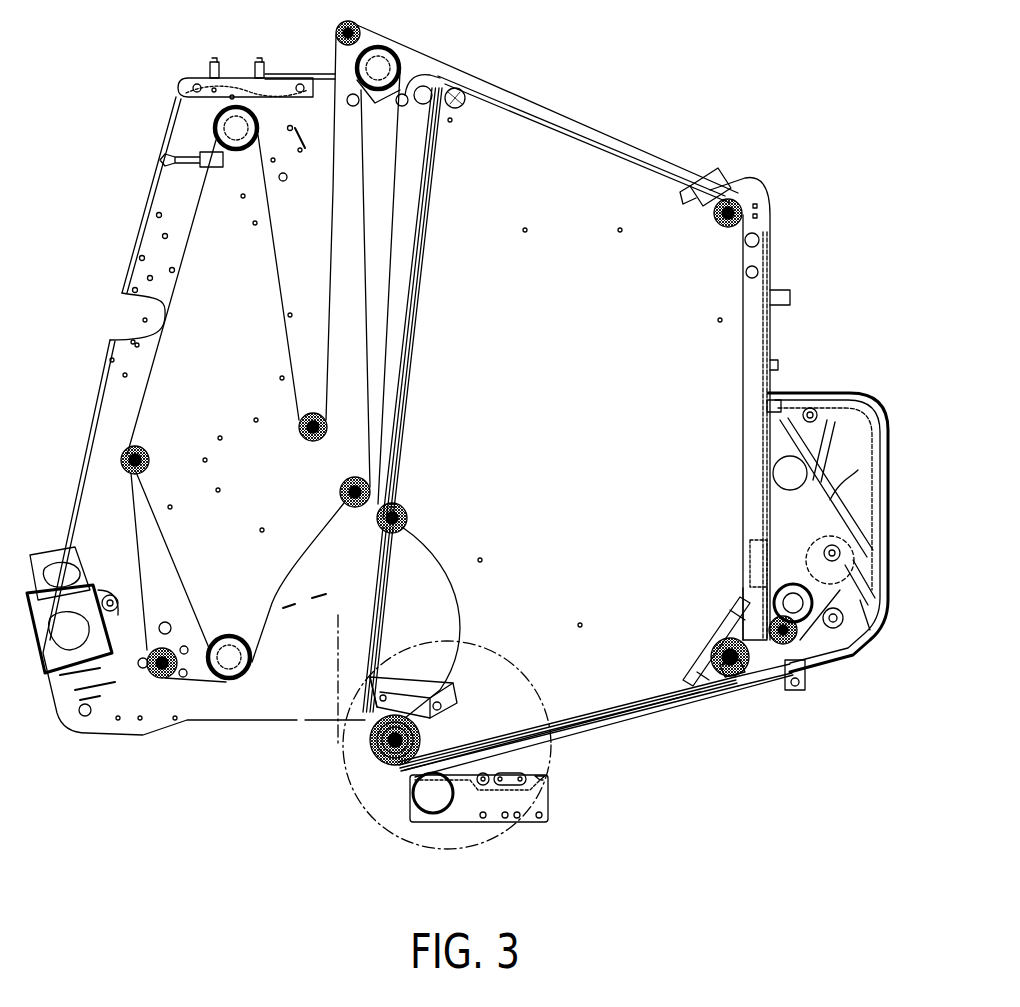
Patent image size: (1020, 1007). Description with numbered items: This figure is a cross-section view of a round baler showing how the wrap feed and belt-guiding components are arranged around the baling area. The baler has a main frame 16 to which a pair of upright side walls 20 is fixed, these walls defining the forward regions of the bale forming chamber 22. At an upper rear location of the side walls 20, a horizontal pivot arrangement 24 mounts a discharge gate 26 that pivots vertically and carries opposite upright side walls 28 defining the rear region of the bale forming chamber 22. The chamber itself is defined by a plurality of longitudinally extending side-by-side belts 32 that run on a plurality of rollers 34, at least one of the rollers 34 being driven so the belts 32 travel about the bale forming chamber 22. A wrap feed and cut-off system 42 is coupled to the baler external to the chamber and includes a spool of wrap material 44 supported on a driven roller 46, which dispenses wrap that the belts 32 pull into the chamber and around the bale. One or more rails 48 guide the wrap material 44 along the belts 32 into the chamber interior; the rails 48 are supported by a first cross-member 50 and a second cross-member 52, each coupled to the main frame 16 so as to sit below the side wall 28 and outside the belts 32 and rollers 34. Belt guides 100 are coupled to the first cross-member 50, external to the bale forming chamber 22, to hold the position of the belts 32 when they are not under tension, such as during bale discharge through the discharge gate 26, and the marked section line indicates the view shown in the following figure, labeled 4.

The main frame 16 is at (765, 668).
The upright side walls 20 is at (314, 105).
The bale forming chamber 22 is at (560, 98).
The horizontal pivot arrangement 24 is at (447, 108).
The discharge gate 26 is at (766, 168).
The opposite upright side walls 28 is at (617, 158).
The belts 32 is at (137, 418).
The rollers 34 is at (355, 28).
The wrap feed and cut-off system 42 is at (885, 558).
The spool of wrap material 44 is at (748, 571).
The roller 46 is at (829, 555).
The rails 48 is at (763, 697).
The first cross-member 50 is at (432, 805).
The second cross-member 52 is at (783, 688).
The belt guides 100 is at (402, 786).
The section line 4 is at (338, 745).